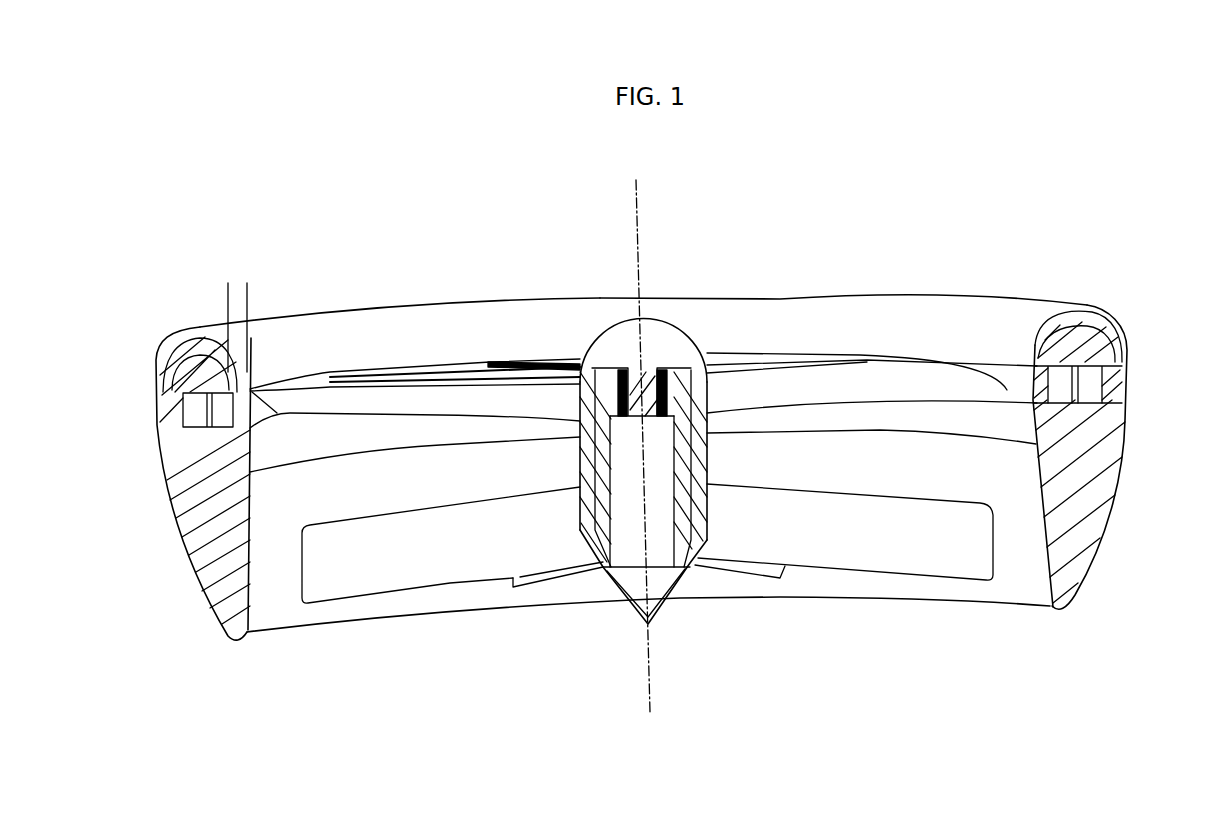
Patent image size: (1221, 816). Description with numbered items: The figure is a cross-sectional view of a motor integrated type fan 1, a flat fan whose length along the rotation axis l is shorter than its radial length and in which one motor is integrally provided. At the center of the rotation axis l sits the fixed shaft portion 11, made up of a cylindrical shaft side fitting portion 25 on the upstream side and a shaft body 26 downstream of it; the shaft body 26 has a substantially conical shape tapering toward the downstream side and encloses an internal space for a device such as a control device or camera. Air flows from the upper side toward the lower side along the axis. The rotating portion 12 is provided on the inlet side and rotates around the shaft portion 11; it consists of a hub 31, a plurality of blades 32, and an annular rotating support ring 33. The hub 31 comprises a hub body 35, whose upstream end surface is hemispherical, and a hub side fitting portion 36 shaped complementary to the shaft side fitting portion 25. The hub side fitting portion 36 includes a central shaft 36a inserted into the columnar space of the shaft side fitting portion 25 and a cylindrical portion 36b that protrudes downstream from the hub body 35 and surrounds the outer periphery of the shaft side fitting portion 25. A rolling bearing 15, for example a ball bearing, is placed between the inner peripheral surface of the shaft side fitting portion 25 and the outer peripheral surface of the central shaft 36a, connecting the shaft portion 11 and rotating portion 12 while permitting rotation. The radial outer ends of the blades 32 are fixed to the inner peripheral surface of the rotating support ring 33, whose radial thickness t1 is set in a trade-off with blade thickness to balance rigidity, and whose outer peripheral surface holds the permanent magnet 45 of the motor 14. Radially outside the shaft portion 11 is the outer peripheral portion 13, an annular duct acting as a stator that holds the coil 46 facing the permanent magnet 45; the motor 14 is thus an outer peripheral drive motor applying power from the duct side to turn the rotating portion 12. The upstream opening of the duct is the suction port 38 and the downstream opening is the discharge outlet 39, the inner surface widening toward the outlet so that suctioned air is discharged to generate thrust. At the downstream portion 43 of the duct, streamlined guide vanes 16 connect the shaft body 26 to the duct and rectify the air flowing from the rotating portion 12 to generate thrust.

The motor integrated type fan 1 is at (714, 230).
The shaft portion 11 is at (588, 572).
The rotating portion 12 is at (658, 367).
The outer peripheral portion 13 is at (313, 311).
The motor 14 is at (1200, 448).
The rolling bearing 15 is at (600, 366).
The guide vane 16 is at (862, 560).
The shaft side fitting portion 25 is at (683, 326).
The shaft body 26 is at (703, 532).
The hub 31 is at (612, 367).
The blade 32 is at (417, 398).
The rotating support ring 33 is at (183, 403).
The hub body 35 is at (648, 314).
The hub side fitting portion 36 is at (575, 404).
The central shaft 36a is at (607, 578).
The cylindrical portion 36b is at (580, 490).
The suction port 38 is at (866, 291).
The discharge outlet 39 is at (922, 619).
The downstream portion 43 is at (1013, 543).
The permanent magnet 45 is at (1102, 403).
The coil 46 is at (1102, 387).
The rotation axis l is at (640, 203).
The thickness of the rotating support ring t1 is at (277, 297).